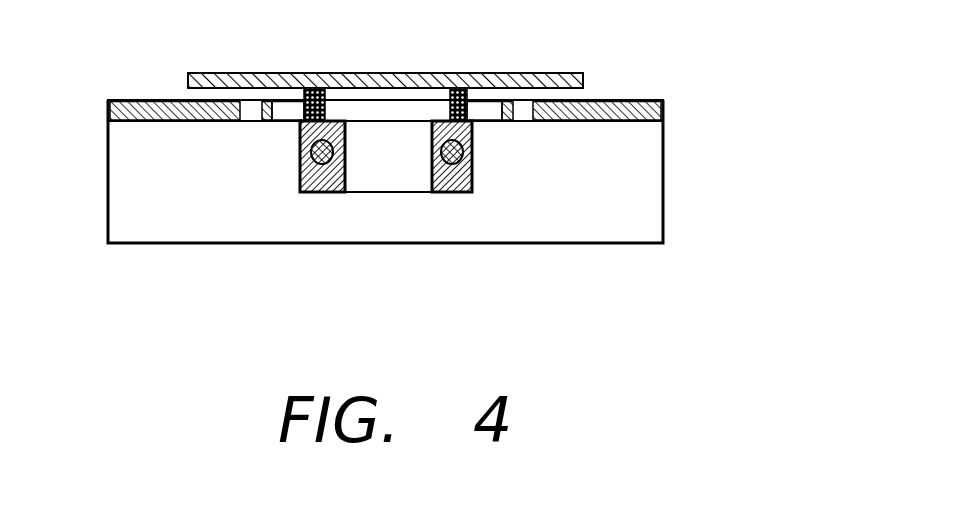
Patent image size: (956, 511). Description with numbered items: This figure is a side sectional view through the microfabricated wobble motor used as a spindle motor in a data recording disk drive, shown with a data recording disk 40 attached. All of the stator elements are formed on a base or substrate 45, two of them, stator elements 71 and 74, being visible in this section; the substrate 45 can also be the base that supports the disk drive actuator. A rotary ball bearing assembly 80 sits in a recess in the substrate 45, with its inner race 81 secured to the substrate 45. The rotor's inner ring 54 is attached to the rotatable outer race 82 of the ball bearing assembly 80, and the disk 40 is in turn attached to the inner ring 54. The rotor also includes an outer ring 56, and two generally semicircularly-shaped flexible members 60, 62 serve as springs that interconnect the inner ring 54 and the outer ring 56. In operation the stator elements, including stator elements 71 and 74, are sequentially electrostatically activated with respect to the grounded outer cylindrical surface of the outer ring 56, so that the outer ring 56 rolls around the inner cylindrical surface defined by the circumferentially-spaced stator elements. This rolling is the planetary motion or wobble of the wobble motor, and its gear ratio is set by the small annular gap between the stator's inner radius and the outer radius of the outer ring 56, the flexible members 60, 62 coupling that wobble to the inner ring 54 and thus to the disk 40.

The data recording disk 40 is at (553, 71).
The substrate 45 is at (647, 177).
The inner ring 54 is at (296, 122).
The outer ring 56 is at (215, 122).
The flexible member 60 is at (265, 122).
The flexible member 62 is at (508, 122).
The stator element 71 is at (122, 100).
The stator element 74 is at (658, 100).
The rotary ball bearing assembly 80 is at (312, 192).
The inner race 81 is at (343, 172).
The outer race 82 is at (458, 190).